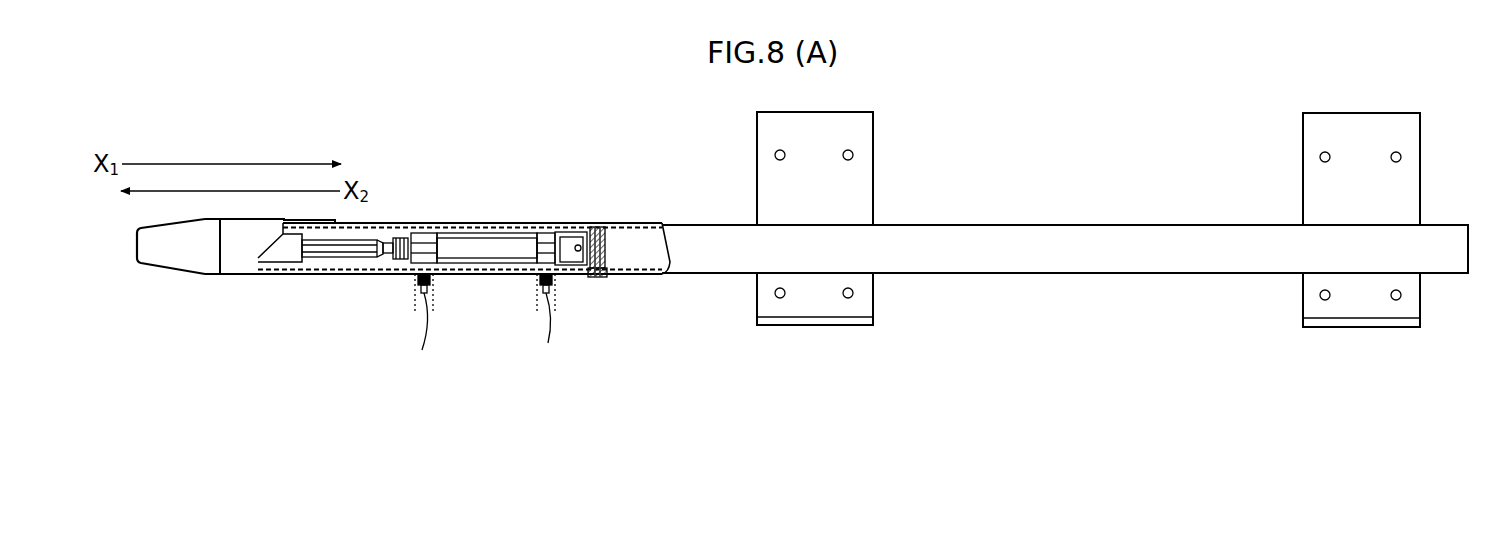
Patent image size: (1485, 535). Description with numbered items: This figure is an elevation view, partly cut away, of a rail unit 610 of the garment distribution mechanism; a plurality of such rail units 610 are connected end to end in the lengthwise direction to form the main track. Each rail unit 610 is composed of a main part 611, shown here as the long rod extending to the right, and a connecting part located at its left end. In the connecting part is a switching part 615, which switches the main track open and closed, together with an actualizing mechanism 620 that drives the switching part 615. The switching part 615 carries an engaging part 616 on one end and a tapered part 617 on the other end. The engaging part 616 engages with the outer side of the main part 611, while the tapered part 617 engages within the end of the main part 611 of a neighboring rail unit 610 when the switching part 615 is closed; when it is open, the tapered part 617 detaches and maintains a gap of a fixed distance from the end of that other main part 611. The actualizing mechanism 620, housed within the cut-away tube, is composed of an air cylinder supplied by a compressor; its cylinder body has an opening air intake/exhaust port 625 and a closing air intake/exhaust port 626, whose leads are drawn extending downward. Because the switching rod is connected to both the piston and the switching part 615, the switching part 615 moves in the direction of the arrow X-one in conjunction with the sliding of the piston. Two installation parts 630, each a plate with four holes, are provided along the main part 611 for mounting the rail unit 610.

The rail unit 610 is at (972, 322).
The main part 611 is at (690, 276).
The switching part 615 is at (220, 277).
The engaging part 616 is at (329, 274).
The tapered part 617 is at (160, 266).
The actualizing mechanism 620 is at (494, 258).
The opening air intake/exhaust port 625 is at (427, 308).
The closing air intake/exhaust port 626 is at (553, 304).
The installation part 630 is at (866, 134).